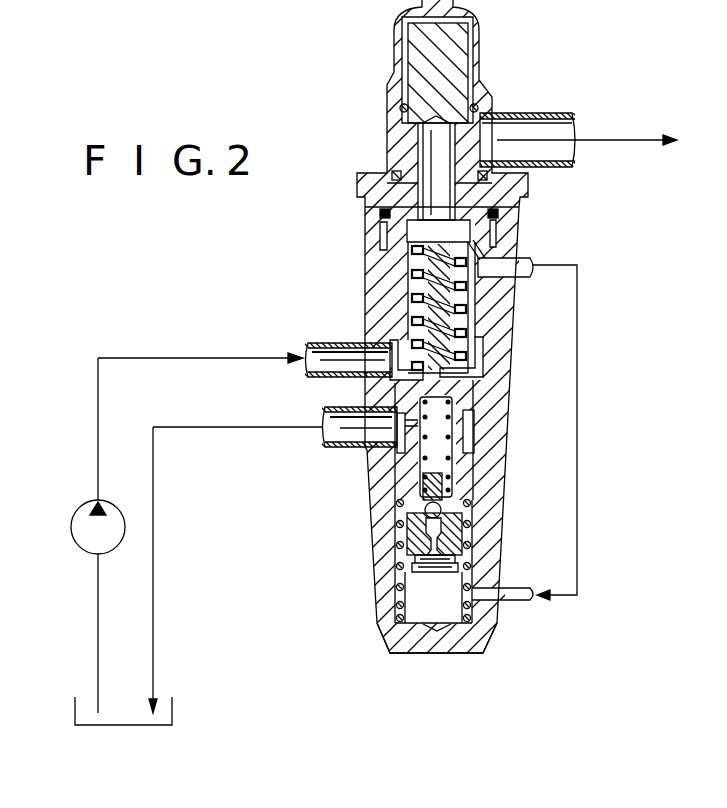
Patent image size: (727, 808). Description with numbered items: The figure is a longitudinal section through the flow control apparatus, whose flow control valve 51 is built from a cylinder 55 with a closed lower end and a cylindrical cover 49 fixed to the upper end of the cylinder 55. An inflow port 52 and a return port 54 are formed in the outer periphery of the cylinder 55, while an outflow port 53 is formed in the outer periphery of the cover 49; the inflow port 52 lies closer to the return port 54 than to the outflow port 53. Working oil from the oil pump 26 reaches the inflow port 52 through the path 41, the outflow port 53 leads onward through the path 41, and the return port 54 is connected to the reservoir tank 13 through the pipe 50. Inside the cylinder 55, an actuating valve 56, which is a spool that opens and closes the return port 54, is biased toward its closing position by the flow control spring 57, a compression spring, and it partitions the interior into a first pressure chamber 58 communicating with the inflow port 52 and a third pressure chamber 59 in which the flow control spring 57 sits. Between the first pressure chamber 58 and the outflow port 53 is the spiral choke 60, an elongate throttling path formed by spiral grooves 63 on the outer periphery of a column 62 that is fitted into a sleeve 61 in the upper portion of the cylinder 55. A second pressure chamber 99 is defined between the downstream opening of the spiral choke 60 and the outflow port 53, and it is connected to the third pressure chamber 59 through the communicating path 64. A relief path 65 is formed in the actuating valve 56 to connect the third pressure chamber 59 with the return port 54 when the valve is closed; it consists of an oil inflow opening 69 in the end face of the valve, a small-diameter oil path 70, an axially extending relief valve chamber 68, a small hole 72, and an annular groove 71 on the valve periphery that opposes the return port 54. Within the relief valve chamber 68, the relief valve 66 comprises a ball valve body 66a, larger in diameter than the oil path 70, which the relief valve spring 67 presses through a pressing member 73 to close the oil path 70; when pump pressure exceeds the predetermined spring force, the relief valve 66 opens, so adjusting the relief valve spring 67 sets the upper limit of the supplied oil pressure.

The reservoir tank 13 is at (172, 712).
The oil pump 26 is at (77, 521).
The path 41 is at (622, 141).
The cylindrical cover 49 is at (478, 35).
The pipe 50 is at (153, 594).
The flow control valve 51 is at (393, 67).
The inflow port 52 is at (362, 366).
The outflow port 53 is at (486, 132).
The return port 54 is at (327, 449).
The cylinder 55 is at (378, 562).
The actuating valve 56 is at (397, 479).
The flow control spring 57 is at (388, 616).
The first pressure chamber 58 is at (483, 377).
The third pressure chamber 59 is at (450, 618).
The spiral choke 60 is at (408, 298).
The sleeve 61 is at (397, 333).
The column 62 is at (452, 318).
The spiral grooves 63 is at (410, 318).
The communicating path 64 is at (527, 260).
The relief path 65 is at (466, 472).
The relief valve 66 is at (398, 522).
The valve body 66a is at (445, 520).
The relief valve spring 67 is at (450, 437).
The relief valve chamber 68 is at (450, 466).
The oil inflow opening 69 is at (434, 568).
The oil path 70 is at (380, 558).
The annular groove 71 is at (468, 420).
The small hole 72 is at (375, 454).
The pressing member 73 is at (393, 501).
The second pressure chamber 99 is at (403, 237).